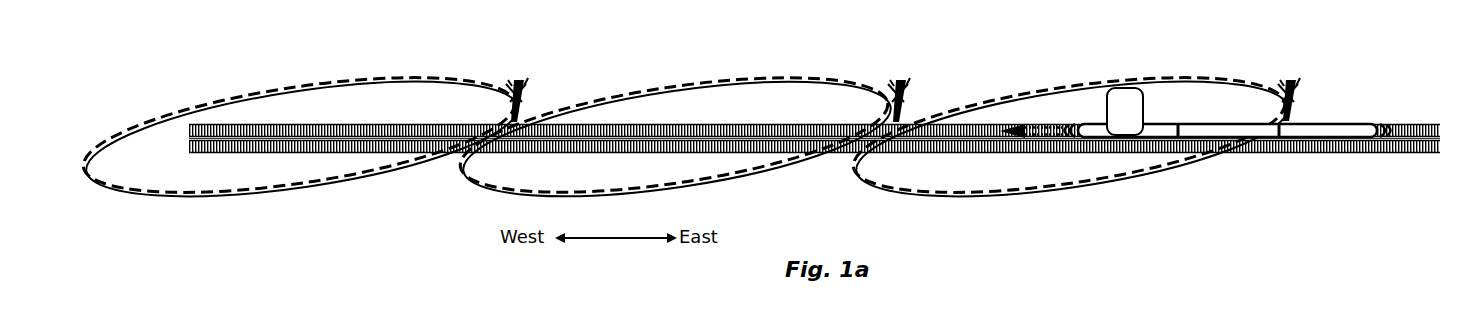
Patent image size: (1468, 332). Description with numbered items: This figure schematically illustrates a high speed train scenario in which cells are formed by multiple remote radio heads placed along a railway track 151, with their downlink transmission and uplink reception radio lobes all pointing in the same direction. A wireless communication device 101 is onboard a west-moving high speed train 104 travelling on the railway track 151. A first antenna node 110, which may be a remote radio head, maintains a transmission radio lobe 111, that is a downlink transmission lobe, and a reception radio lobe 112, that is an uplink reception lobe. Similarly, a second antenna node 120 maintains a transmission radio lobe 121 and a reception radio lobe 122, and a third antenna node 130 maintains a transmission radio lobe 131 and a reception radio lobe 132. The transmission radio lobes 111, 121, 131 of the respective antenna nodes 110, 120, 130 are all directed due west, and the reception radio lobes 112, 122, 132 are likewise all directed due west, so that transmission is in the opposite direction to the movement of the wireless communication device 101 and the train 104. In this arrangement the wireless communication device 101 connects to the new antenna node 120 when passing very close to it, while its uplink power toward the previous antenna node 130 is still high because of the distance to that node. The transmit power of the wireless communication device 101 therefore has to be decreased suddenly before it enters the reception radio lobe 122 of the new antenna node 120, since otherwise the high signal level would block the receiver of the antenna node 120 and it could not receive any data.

The wireless communication device 101 is at (1110, 92).
The train 104 is at (1303, 134).
The first antenna node 110 is at (515, 83).
The transmission radio lobe 111 is at (351, 82).
The reception radio lobe 112 is at (407, 76).
The second antenna node 120 is at (895, 83).
The transmission radio lobe 121 is at (748, 82).
The reception radio lobe 122 is at (810, 77).
The third antenna node 130 is at (1287, 85).
The transmission radio lobe 131 is at (1160, 80).
The reception radio lobe 132 is at (1223, 78).
The railway track 151 is at (1413, 123).